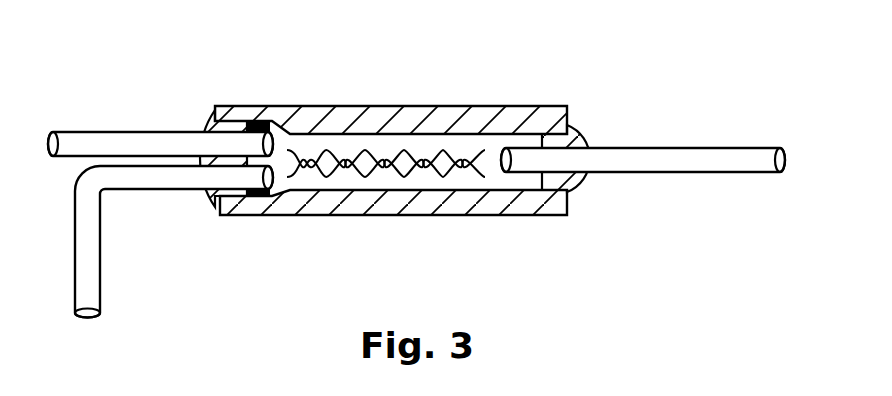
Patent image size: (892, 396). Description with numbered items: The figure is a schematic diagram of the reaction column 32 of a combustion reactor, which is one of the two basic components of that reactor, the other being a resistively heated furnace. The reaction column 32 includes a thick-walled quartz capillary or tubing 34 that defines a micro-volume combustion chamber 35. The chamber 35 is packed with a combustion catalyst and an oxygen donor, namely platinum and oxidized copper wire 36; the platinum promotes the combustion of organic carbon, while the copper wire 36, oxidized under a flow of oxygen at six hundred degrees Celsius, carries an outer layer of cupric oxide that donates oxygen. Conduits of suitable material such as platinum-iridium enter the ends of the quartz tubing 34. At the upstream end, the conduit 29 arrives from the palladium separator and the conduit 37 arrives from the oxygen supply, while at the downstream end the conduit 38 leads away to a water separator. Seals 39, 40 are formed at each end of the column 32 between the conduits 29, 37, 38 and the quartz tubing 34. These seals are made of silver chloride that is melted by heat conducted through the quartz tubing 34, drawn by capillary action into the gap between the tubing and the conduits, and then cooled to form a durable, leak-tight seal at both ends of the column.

The conduit 29 is at (127, 132).
The reaction column 32 is at (388, 69).
The quartz tubing 34 is at (457, 106).
The combustion chamber 35 is at (355, 180).
The oxidized copper wire 36 is at (421, 176).
The conduit 37 is at (100, 287).
The conduit 38 is at (672, 148).
The seal 39 is at (200, 205).
The seal 40 is at (588, 186).